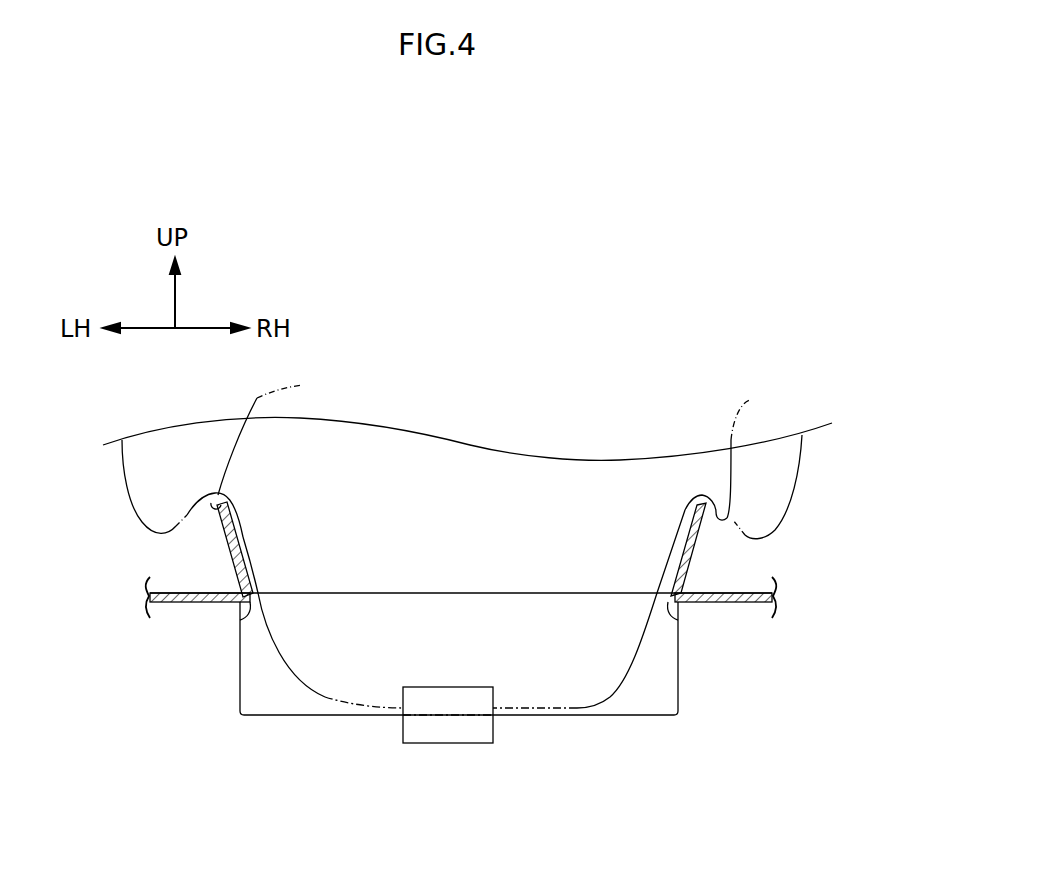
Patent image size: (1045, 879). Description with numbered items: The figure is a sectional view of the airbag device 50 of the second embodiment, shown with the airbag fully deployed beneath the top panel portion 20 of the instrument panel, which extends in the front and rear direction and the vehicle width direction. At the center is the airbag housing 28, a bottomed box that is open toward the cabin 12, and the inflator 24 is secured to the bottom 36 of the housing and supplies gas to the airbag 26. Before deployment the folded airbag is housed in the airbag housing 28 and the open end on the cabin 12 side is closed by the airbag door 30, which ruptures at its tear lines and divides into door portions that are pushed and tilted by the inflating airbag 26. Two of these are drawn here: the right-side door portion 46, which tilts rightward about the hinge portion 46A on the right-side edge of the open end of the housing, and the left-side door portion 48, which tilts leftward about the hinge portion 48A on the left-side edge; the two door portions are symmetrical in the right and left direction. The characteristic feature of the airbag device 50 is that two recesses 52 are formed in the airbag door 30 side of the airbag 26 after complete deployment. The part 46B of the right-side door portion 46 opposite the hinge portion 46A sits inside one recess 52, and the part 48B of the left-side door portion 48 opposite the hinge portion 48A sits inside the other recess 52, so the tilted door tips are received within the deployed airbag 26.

The cabin 12 is at (496, 391).
The top panel portion 20 is at (743, 593).
The inflator 24 is at (448, 745).
The airbag 26 is at (790, 485).
The airbag housing 28 is at (240, 652).
The airbag door 30 is at (697, 548).
The bottom 36 is at (314, 714).
The right-side door portion 46 is at (693, 575).
The hinge portion 46A is at (680, 637).
The part of the right-side door portion 46B is at (697, 513).
The left-side door portion 48 is at (226, 563).
The hinge portion 48A is at (240, 622).
The part of the left-side door portion 48B is at (233, 515).
The airbag device 50 is at (666, 390).
The recesses 52 is at (500, 433).